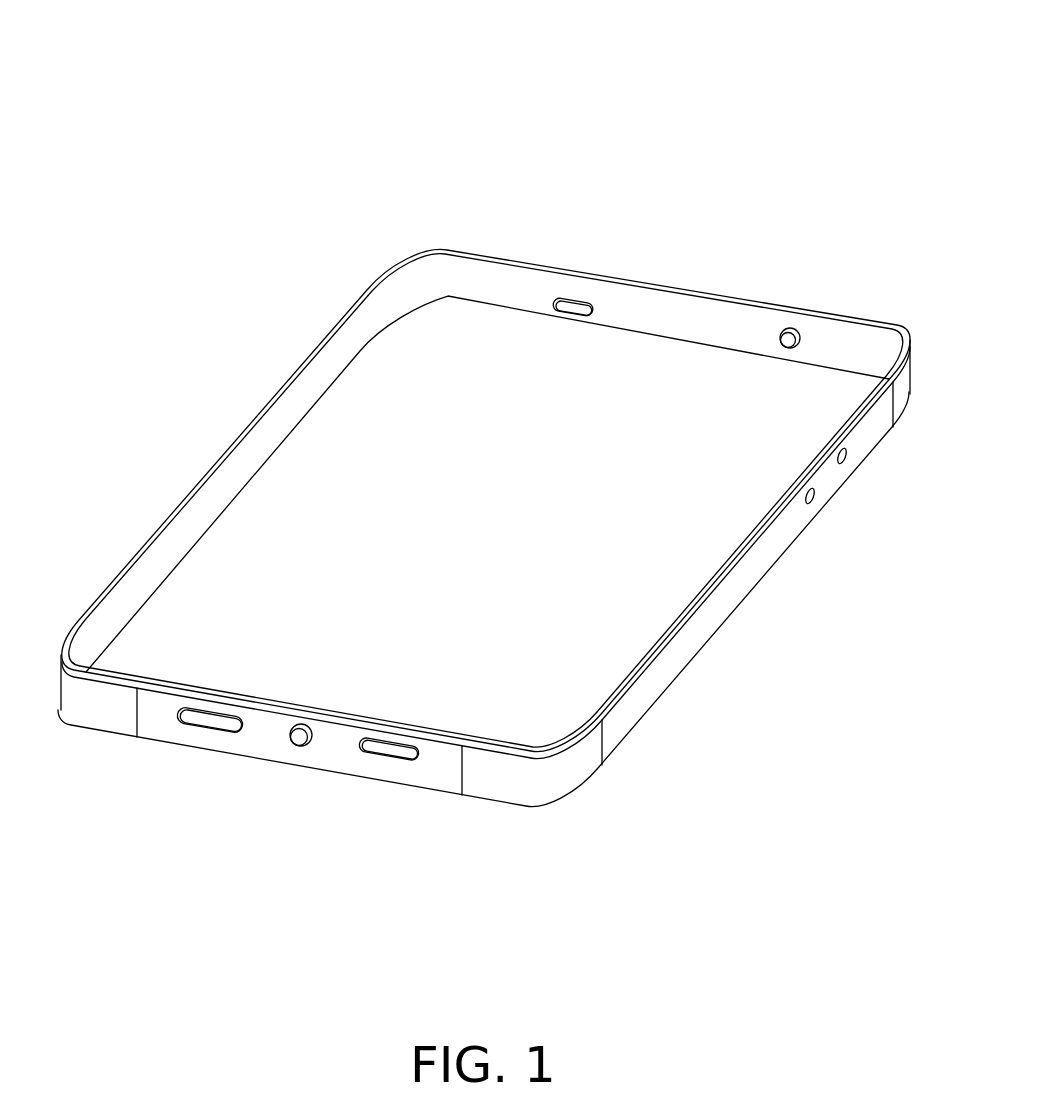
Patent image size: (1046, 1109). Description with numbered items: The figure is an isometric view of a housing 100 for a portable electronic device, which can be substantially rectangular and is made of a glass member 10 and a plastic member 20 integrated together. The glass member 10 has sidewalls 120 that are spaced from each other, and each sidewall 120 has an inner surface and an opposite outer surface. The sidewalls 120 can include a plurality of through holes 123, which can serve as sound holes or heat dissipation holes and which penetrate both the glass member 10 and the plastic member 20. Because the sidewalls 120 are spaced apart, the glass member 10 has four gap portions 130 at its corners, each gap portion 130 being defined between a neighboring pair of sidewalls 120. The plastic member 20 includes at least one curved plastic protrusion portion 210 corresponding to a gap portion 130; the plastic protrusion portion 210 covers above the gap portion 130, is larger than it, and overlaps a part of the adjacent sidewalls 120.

The housing 100 is at (484, 451).
The glass member 10 is at (687, 647).
The plastic member 20 is at (707, 525).
The sidewall 120 is at (400, 775).
The through hole 123 is at (574, 299).
The gap portion 130 is at (510, 738).
The plastic protrusion portion 210 is at (564, 767).